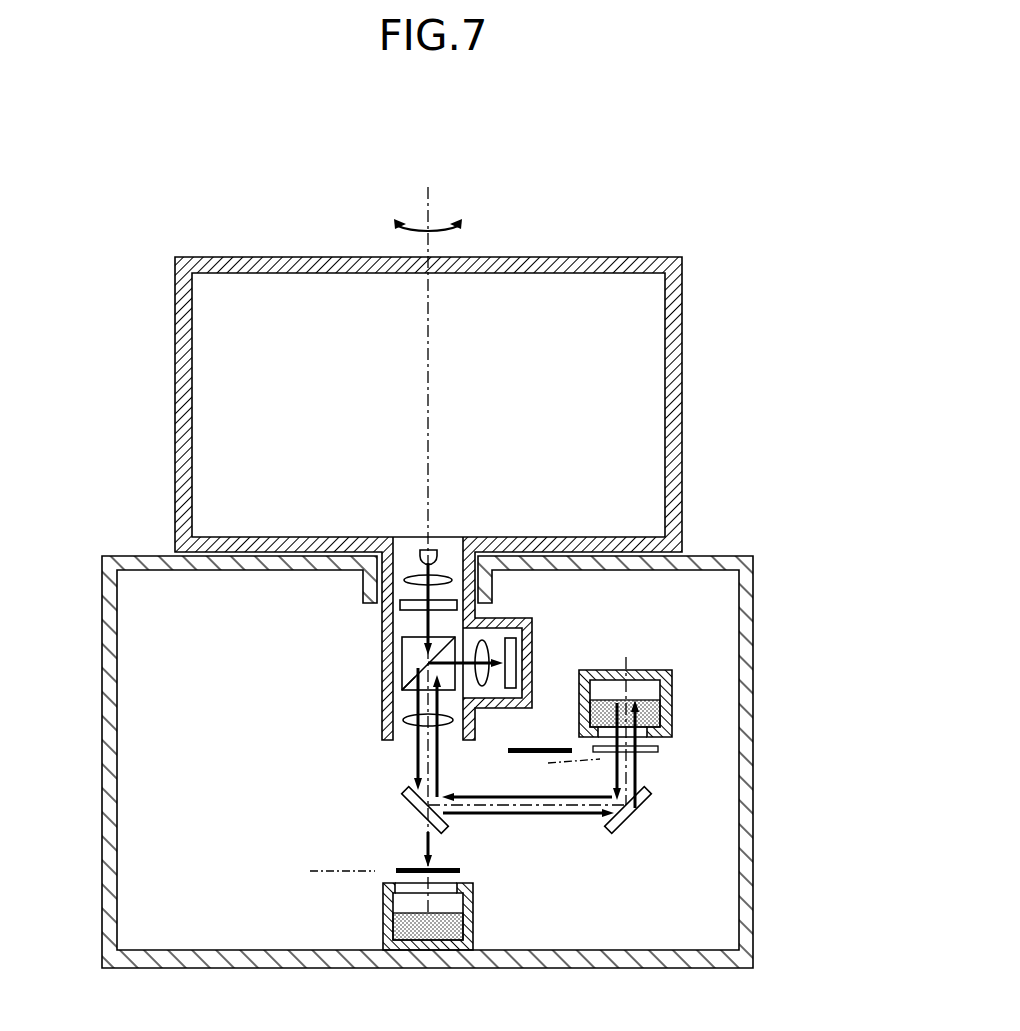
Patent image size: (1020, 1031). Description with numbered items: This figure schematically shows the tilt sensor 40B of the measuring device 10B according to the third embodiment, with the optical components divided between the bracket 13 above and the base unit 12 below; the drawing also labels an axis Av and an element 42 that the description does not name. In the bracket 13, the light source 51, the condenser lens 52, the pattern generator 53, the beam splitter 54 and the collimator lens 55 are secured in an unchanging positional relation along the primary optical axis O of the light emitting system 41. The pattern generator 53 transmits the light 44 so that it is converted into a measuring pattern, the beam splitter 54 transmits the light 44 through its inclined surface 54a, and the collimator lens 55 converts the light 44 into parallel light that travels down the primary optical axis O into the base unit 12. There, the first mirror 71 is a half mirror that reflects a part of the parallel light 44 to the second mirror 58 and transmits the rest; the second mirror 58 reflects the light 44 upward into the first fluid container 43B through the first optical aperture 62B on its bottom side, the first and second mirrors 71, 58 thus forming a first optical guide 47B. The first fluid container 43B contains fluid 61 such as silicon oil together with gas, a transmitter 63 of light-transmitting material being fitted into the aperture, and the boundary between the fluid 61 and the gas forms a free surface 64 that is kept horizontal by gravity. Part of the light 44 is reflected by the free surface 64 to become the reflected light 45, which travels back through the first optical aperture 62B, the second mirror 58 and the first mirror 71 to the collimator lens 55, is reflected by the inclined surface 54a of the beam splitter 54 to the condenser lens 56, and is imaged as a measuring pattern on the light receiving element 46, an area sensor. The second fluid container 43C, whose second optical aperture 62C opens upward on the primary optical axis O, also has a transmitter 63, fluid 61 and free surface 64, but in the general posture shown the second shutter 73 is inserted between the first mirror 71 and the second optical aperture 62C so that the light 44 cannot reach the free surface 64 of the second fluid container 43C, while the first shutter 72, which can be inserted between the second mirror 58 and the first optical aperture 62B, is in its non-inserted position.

The measuring device 10B is at (664, 172).
The rotation axis Av is at (428, 200).
The base unit 12 is at (132, 552).
The bracket 13 is at (172, 402).
The tilt sensor 40B is at (665, 565).
The light emitting system 41 is at (402, 640).
The light receiving unit housing 42 is at (460, 705).
The first fluid container 43B is at (648, 662).
The second fluid container 43C is at (370, 924).
The light 44 is at (400, 603).
The reflected light 45 is at (486, 688).
The light receiving element 46 is at (516, 642).
The first optical guide 47B is at (528, 836).
The light source 51 is at (425, 548).
The condenser lens 52 is at (447, 578).
The pattern generator 53 is at (406, 624).
The beam splitter 54 is at (402, 672).
The inclined surface 54a is at (404, 690).
The collimator lens 55 is at (403, 718).
The condenser lens 56 is at (490, 627).
The second mirror 58 is at (641, 814).
The fluid 61 is at (660, 708).
The first optical aperture 62B is at (653, 718).
The second optical aperture 62C is at (455, 895).
The transmitter 63 is at (612, 735).
The free surface 64 is at (647, 697).
The first mirror 71 is at (403, 800).
The first shutter 72 is at (523, 754).
The second shutter 73 is at (398, 868).
The primary optical axis O is at (412, 775).